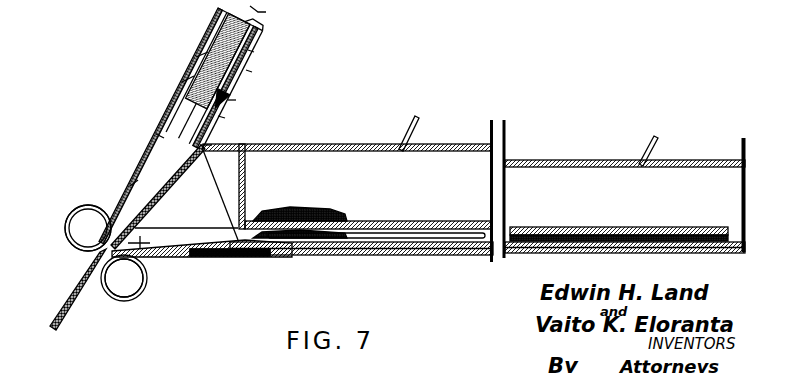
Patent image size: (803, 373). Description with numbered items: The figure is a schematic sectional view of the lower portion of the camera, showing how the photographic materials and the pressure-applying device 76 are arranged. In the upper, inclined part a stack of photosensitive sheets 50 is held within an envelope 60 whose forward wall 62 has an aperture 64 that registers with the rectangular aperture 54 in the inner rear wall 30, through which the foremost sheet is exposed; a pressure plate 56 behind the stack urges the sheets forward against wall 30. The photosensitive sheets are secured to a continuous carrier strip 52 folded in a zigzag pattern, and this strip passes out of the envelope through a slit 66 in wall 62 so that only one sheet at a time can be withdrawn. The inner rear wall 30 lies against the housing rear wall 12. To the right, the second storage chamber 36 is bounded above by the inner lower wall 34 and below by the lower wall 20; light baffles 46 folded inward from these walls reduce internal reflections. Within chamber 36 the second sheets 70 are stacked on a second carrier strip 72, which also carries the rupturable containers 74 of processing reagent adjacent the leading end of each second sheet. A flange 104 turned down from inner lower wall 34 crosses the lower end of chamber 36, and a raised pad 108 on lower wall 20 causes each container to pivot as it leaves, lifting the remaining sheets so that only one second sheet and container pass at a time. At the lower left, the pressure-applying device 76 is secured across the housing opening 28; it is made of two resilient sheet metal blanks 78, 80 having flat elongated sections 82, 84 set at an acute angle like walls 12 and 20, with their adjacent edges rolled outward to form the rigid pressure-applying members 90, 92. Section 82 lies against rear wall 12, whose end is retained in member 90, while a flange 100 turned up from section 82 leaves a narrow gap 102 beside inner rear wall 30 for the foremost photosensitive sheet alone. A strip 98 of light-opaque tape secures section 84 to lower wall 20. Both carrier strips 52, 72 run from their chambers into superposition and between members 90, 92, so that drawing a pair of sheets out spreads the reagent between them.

The rear wall 12 is at (172, 96).
The lower wall 20 is at (440, 256).
The opening 28 is at (150, 250).
The inner rear wall 30 is at (224, 118).
The inner lower wall 34 is at (464, 148).
The second storage chamber 36 is at (378, 172).
The light baffles 46 is at (398, 114).
The photosensitive sheets 50 is at (262, 12).
The carrier strip 52 is at (168, 117).
The rectangular aperture 54 is at (251, 71).
The pressure plate 56 is at (196, 57).
The envelope 60 is at (184, 81).
The forward wall 62 is at (210, 145).
The aperture 64 is at (253, 51).
The slit 66 is at (236, 100).
The second sheets 70 is at (406, 224).
The carrier strip 72 is at (72, 300).
The rupturable containers 74 is at (300, 206).
The pressure-applying device 76 is at (78, 258).
The blank 78 is at (72, 204).
The blank 80 is at (140, 297).
The elongated rectangular section 82 is at (134, 184).
The elongated rectangular section 84 is at (188, 258).
The pressure-applying member 90 is at (65, 224).
The pressure-applying member 92 is at (118, 303).
The strip 98 is at (214, 257).
The flange 100 is at (162, 137).
The narrow gap 102 is at (244, 162).
The flange 104 is at (228, 200).
The pad 108 is at (304, 250).